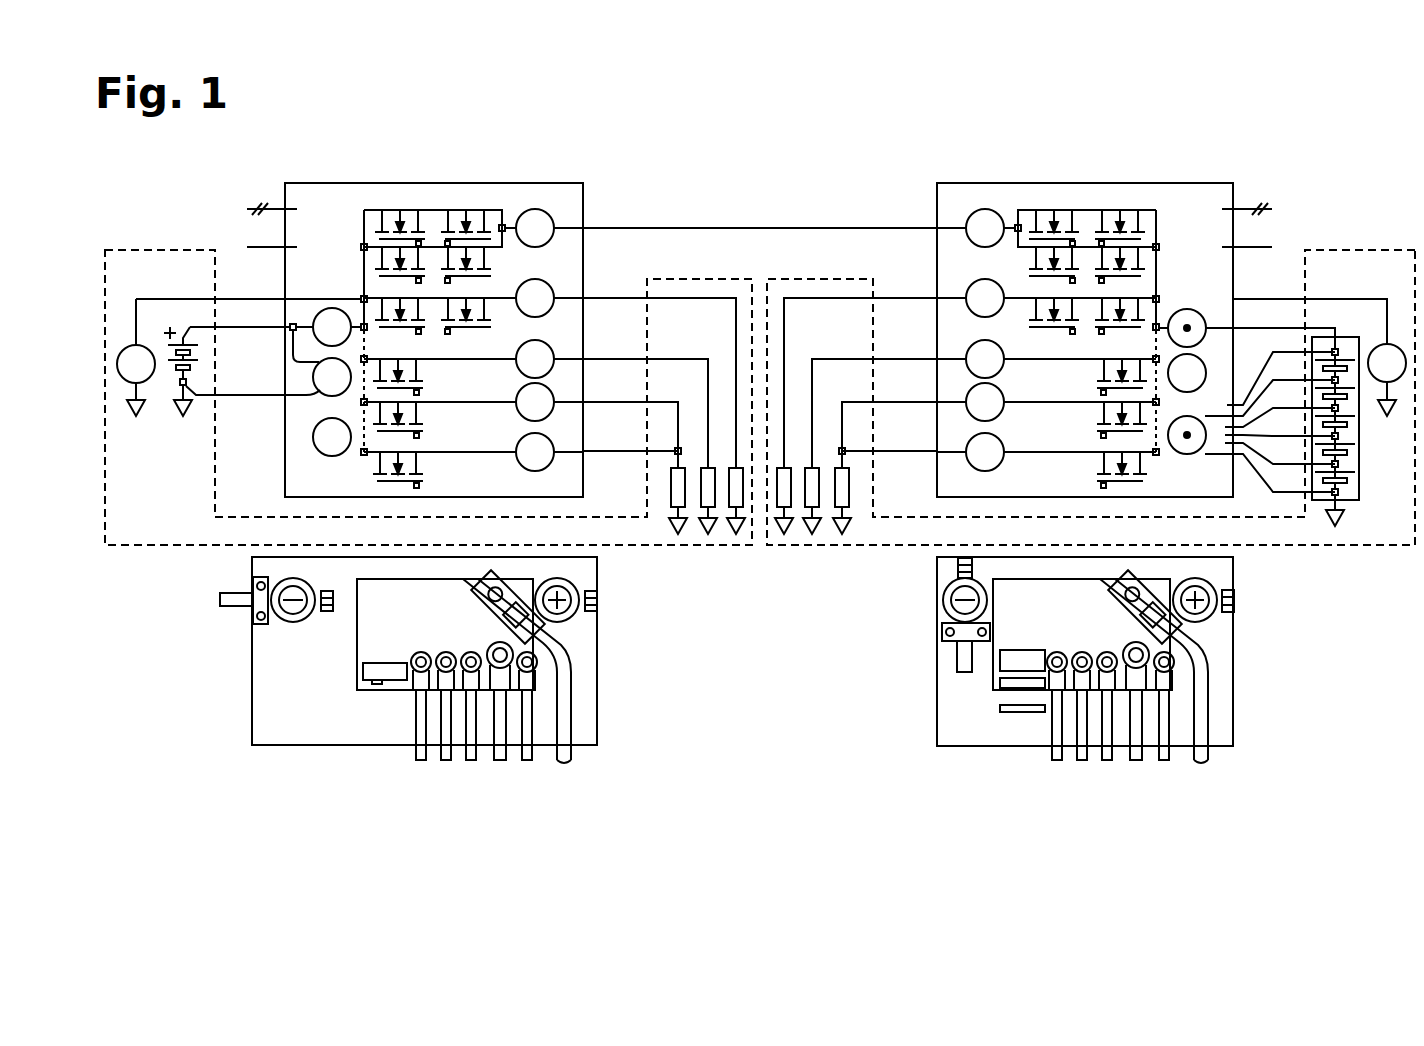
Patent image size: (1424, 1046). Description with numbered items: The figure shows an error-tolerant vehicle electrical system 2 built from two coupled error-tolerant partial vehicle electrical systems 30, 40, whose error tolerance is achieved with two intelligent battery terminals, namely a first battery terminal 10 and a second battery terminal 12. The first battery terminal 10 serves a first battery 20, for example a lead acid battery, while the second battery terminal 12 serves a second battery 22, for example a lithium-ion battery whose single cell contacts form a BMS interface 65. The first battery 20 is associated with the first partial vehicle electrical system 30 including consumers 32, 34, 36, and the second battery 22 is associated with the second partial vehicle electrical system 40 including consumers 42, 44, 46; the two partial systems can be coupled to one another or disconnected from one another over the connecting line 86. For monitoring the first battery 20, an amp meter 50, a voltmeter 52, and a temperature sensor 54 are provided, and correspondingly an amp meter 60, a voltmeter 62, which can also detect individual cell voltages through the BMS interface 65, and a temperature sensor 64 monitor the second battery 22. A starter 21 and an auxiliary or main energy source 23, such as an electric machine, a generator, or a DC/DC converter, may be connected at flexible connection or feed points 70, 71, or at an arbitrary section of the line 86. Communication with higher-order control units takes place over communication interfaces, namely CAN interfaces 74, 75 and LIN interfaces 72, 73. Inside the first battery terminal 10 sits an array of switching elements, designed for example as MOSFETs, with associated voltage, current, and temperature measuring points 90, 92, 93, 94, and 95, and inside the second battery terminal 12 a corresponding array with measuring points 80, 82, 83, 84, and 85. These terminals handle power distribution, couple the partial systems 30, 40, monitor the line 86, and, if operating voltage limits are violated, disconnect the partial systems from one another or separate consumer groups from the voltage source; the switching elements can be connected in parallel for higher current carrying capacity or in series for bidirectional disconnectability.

The error-tolerant vehicle electrical system 2 is at (793, 168).
The first battery terminal 10 is at (562, 182).
The second battery terminal 12 is at (1112, 182).
The first battery 20 is at (190, 425).
The starter 21 is at (148, 425).
The second battery 22 is at (1373, 444).
The auxiliary or main energy source 23 is at (1395, 422).
The first partial vehicle electrical system 30 is at (690, 555).
The consumer 32 is at (670, 487).
The consumer 34 is at (757, 469).
The consumer 36 is at (742, 515).
The second partial vehicle electrical system 40 is at (840, 555).
The consumer 42 is at (780, 515).
The consumer 44 is at (763, 469).
The consumer 46 is at (850, 487).
The amp meter 50 is at (332, 306).
The voltmeter 52 is at (318, 392).
The temperature sensor 54 is at (318, 451).
The amp meter 60 is at (1188, 307).
The voltmeter 62 is at (1194, 458).
The temperature sensor 64 is at (1201, 359).
The BMS interface 65 is at (1250, 446).
The flexible connection point 70 is at (262, 297).
The flexible connection point 71 is at (1258, 297).
The LIN communication interface 72 is at (258, 243).
The LIN communication interface 73 is at (1262, 243).
The CAN communication interface 74 is at (262, 200).
The CAN communication interface 75 is at (1258, 200).
The switching element with measuring point 80 is at (999, 203).
The switching element with measuring point 82 is at (1020, 327).
The switching element with measuring point 83 is at (1088, 389).
The switching element with measuring point 84 is at (1088, 433).
The switching element with measuring point 85 is at (1088, 479).
The line 86 is at (710, 216).
The switching element with measuring point 90 is at (520, 203).
The switching element with measuring point 92 is at (500, 327).
The switching element with measuring point 93 is at (432, 389).
The switching element with measuring point 94 is at (432, 433).
The switching element with measuring point 95 is at (432, 479).